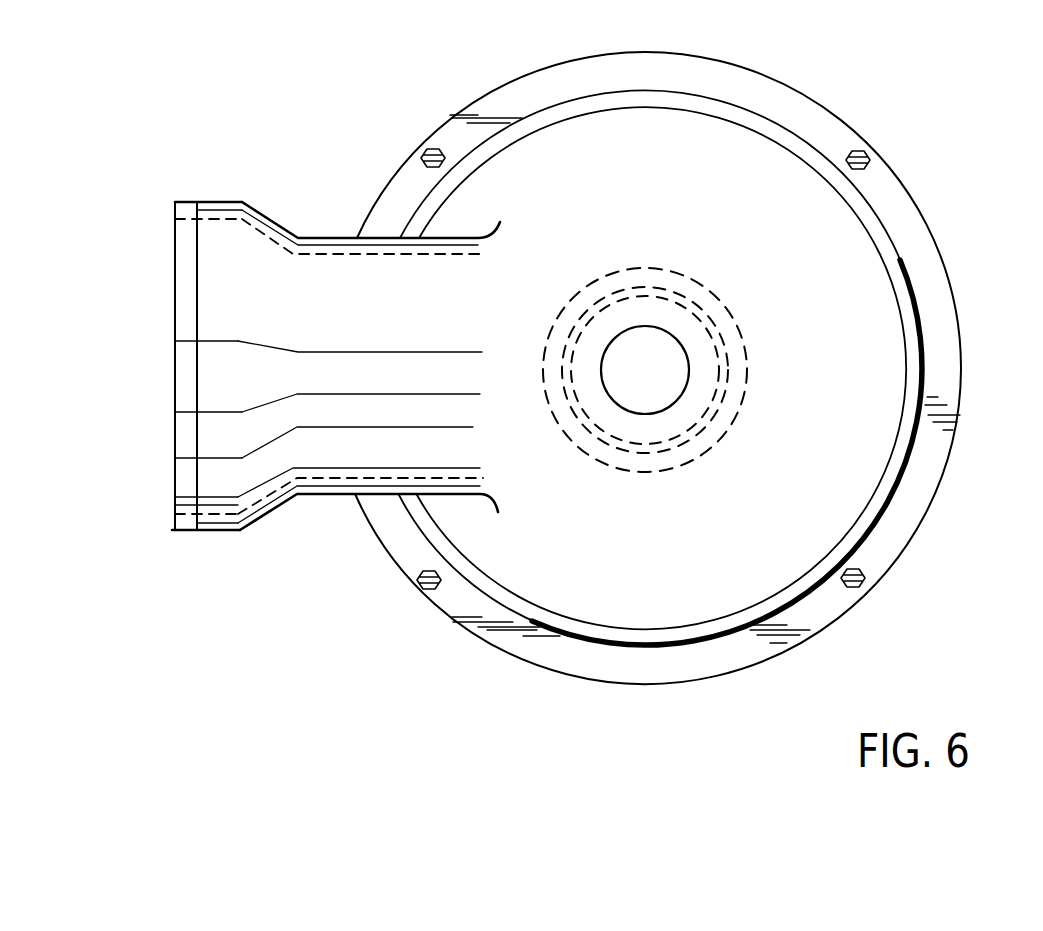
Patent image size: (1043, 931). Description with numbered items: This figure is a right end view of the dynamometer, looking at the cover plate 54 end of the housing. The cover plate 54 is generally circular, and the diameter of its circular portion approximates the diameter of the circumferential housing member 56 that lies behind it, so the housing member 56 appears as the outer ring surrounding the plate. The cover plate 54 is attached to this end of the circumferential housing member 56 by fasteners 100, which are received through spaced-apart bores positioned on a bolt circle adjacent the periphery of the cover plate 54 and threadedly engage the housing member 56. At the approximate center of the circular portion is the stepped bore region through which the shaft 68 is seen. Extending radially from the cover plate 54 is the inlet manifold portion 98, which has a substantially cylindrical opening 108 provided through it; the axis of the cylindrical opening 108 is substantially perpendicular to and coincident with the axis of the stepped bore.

The cover plate 54 is at (872, 296).
The circumferential housing member 56 is at (792, 103).
The shaft 68 is at (665, 378).
The inlet manifold portion 98 is at (315, 460).
The fasteners 100 is at (867, 150).
The cylindrical opening 108 is at (220, 424).